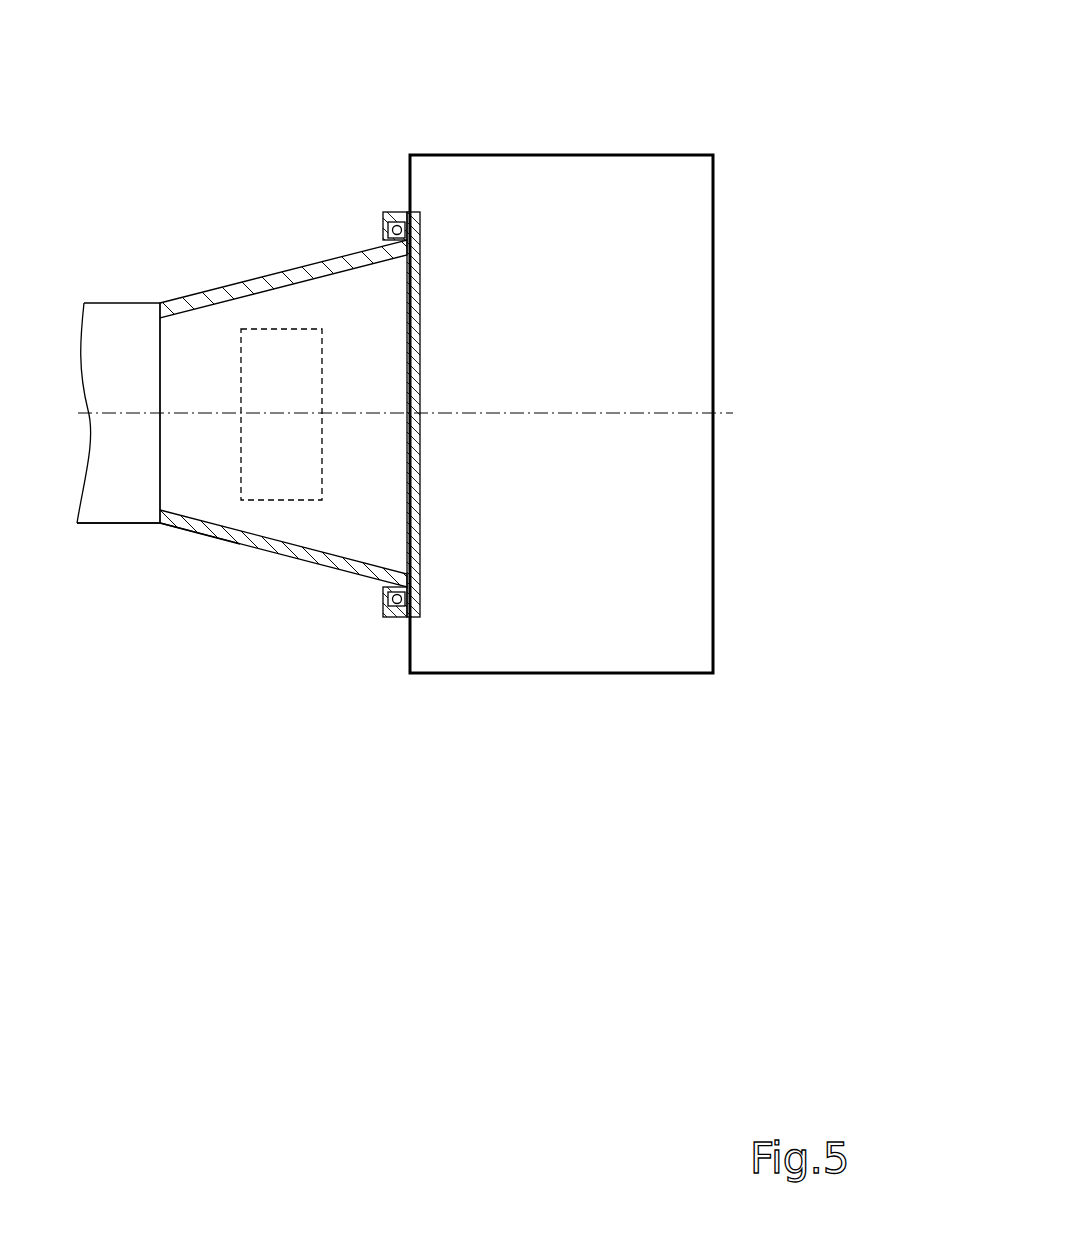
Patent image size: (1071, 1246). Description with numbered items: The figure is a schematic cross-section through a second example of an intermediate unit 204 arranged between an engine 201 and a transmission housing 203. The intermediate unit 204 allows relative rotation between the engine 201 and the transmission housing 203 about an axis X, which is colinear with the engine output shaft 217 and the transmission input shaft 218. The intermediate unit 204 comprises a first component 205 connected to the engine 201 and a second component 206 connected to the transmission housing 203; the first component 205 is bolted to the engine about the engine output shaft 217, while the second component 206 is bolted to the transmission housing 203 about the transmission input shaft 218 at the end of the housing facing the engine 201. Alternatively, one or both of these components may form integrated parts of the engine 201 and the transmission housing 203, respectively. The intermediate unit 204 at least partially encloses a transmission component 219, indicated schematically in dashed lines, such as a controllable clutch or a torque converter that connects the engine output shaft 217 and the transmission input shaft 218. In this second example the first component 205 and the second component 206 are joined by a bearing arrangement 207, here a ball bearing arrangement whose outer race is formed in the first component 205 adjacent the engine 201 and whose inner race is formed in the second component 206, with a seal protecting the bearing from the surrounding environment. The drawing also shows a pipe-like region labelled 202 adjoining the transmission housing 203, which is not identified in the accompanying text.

The engine 201 is at (481, 146).
The pipe / conduit 202 is at (103, 286).
The transmission housing 203 is at (133, 525).
The intermediate unit 204 is at (295, 602).
The first component 205 is at (396, 618).
The second component 206 is at (198, 545).
The bearing arrangement 207 is at (398, 195).
The engine output shaft 217 is at (622, 391).
The transmission input shaft 218 is at (187, 398).
The transmission component 219 is at (333, 328).
The axis X is at (635, 416).